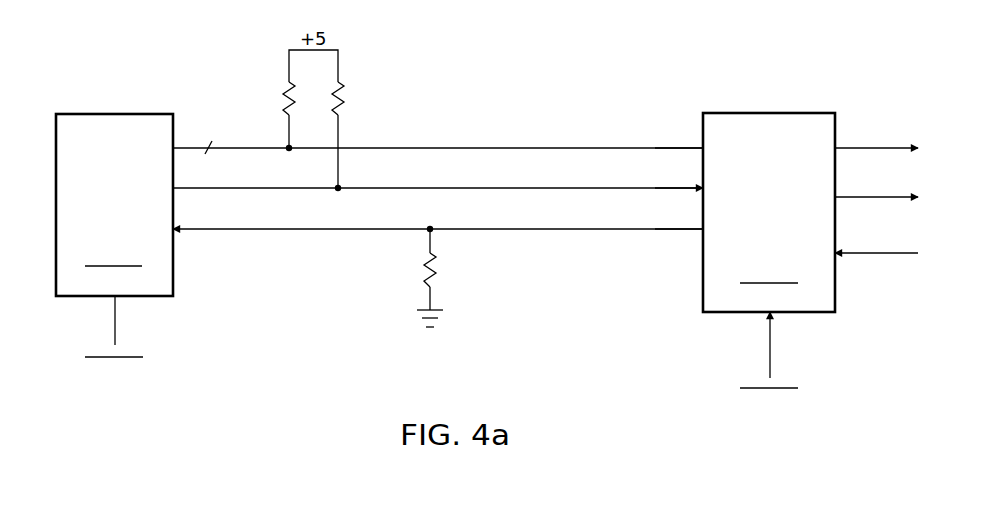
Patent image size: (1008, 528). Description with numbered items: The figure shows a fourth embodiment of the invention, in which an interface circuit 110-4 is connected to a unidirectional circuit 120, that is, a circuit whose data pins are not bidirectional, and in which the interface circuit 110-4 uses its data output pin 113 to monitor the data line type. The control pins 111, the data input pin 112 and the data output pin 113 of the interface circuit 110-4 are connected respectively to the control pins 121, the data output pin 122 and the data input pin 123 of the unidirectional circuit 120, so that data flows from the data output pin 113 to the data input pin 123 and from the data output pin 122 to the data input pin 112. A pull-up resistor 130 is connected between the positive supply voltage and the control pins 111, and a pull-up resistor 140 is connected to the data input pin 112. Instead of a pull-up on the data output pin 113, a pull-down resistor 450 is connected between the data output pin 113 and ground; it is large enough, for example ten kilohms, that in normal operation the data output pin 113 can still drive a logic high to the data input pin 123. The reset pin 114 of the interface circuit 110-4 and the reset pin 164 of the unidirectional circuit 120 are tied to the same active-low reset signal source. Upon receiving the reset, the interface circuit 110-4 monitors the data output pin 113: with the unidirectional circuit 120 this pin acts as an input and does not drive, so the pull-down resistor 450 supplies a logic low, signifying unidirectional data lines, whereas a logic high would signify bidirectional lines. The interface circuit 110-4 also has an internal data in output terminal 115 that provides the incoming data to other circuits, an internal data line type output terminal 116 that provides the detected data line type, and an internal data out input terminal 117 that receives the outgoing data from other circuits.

The unidirectional circuit 120 is at (130, 113).
The control pins 121 is at (248, 143).
The data output pin 122 is at (248, 183).
The data input pin 123 is at (248, 224).
The pull-up resistor 130 is at (281, 92).
The pull-up resistor 140 is at (346, 92).
The pull-down resistor 450 is at (440, 270).
The reset pin 164 is at (116, 312).
The interface circuit 110-4 is at (780, 112).
The control pins 111 is at (663, 143).
The data input pin 112 is at (663, 183).
The data output pin 113 is at (663, 224).
The reset pin 114 is at (772, 338).
The internal data in output terminal 115 is at (872, 143).
The internal data line type output terminal 116 is at (872, 191).
The internal data out input terminal 117 is at (872, 248).